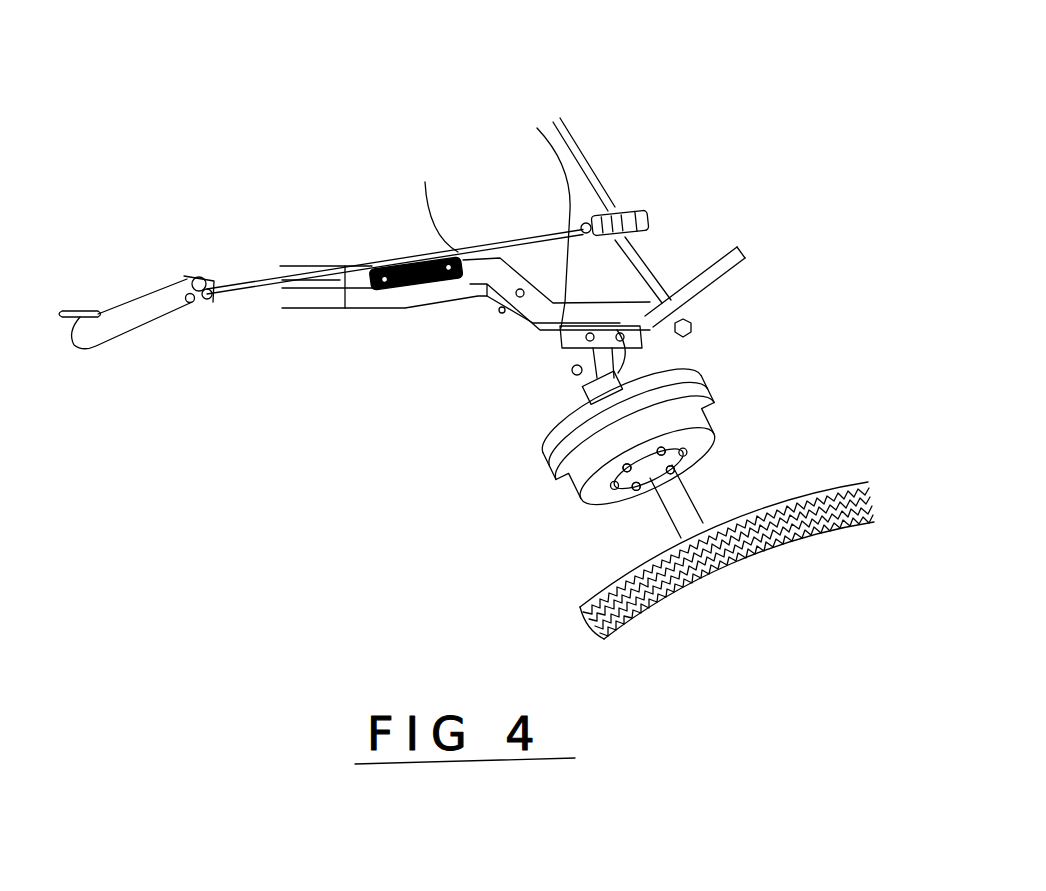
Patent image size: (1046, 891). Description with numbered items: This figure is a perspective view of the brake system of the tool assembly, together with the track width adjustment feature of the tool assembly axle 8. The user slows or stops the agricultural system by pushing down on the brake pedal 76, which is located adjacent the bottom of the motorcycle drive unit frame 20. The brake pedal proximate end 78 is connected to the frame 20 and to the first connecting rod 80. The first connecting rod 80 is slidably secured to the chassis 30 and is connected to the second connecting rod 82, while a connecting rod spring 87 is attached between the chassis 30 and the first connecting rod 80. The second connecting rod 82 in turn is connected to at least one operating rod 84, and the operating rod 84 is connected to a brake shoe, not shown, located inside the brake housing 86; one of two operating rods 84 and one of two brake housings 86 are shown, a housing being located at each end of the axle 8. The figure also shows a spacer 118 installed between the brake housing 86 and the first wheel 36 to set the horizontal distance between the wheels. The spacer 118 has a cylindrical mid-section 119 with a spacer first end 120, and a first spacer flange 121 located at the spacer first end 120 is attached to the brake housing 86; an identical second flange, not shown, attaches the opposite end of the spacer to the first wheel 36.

The tool assembly axle 8 is at (572, 368).
The motorcycle drive unit frame 20 is at (318, 298).
The chassis 30 is at (361, 300).
The first wheel 36 is at (760, 560).
The brake pedal 76 is at (135, 342).
The brake pedal proximate end 78 is at (183, 275).
The first connecting rod 80 is at (497, 238).
The second connecting rod 82 is at (597, 162).
The operating rod 84 is at (653, 345).
The brake housing 86 is at (730, 412).
The connecting rod spring 87 is at (410, 293).
The spacer 118 is at (433, 553).
The cylindrical mid-section 119 is at (675, 508).
The spacer first end 120 is at (660, 483).
The first spacer flange 121 is at (637, 466).